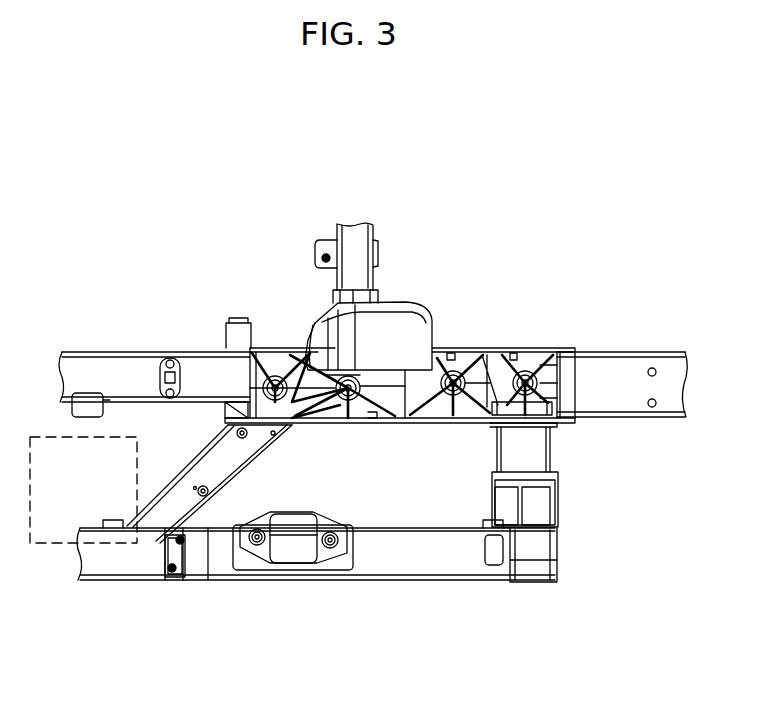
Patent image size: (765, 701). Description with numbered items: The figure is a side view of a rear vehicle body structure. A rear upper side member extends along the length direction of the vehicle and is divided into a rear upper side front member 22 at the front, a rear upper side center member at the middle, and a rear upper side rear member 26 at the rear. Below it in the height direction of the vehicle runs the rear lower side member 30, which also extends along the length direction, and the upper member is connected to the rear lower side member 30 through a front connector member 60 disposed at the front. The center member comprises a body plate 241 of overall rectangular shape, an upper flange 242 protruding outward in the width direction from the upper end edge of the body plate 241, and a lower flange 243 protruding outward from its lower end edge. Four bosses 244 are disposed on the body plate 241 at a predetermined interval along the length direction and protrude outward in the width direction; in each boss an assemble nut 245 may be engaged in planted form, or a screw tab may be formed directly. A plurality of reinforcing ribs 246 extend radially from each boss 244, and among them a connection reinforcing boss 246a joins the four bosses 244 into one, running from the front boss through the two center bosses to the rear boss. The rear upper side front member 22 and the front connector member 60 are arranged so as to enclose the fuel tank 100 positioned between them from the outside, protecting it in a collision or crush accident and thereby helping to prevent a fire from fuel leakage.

The rear upper side front member 22 is at (96, 362).
The rear upper side rear member 26 is at (672, 367).
The rear lower side member 30 is at (250, 583).
The front connector member 60 is at (183, 508).
The fuel tank 100 is at (52, 545).
The body plate 241 is at (438, 423).
The upper flange 242 is at (452, 346).
The lower flange 243 is at (468, 424).
The bosses 244 is at (462, 374).
The assemble nut 245 is at (266, 375).
The reinforcing ribs 246 is at (360, 399).
The connection reinforcing boss 246a is at (400, 423).